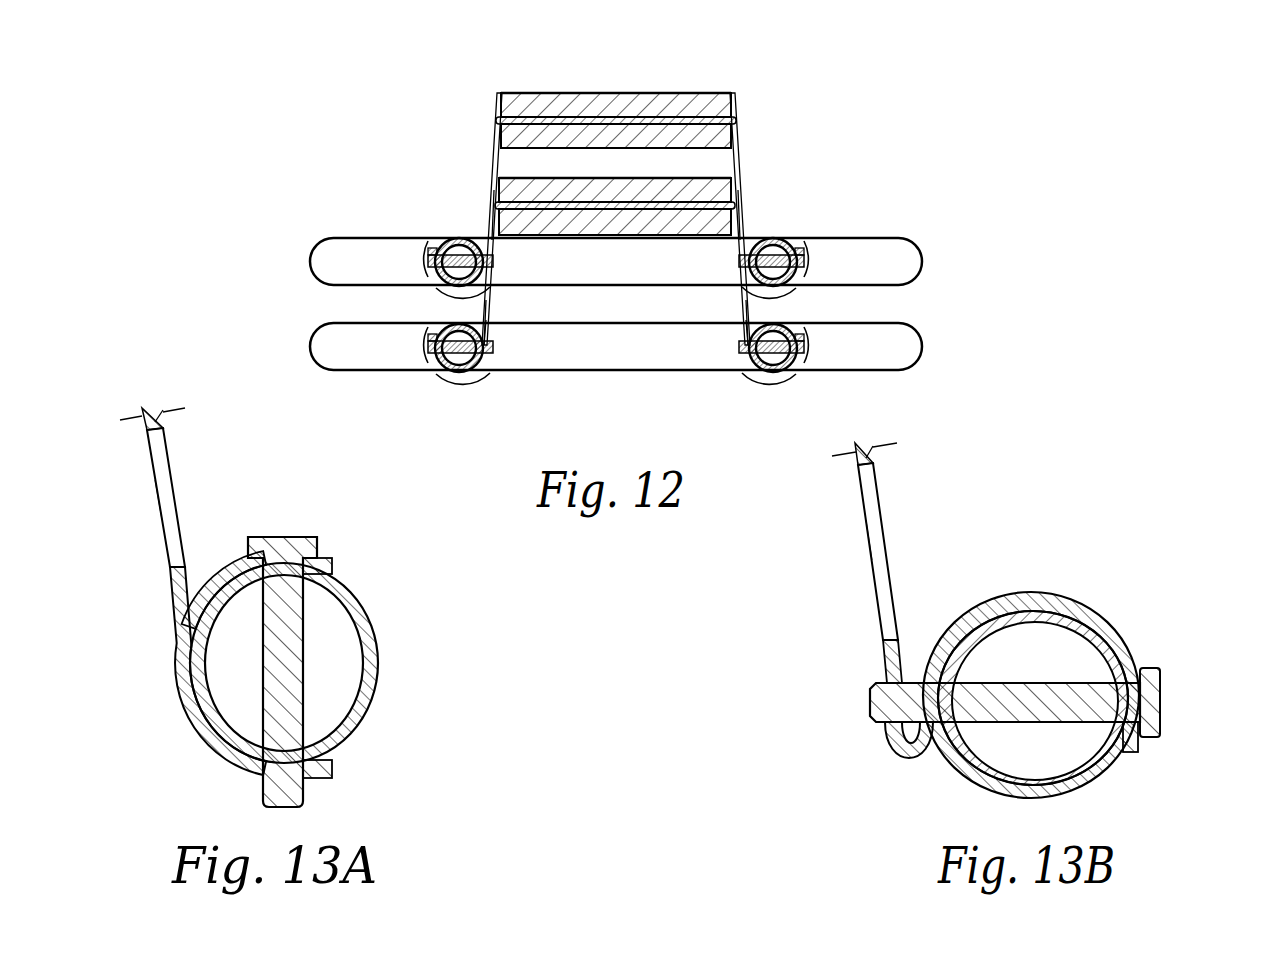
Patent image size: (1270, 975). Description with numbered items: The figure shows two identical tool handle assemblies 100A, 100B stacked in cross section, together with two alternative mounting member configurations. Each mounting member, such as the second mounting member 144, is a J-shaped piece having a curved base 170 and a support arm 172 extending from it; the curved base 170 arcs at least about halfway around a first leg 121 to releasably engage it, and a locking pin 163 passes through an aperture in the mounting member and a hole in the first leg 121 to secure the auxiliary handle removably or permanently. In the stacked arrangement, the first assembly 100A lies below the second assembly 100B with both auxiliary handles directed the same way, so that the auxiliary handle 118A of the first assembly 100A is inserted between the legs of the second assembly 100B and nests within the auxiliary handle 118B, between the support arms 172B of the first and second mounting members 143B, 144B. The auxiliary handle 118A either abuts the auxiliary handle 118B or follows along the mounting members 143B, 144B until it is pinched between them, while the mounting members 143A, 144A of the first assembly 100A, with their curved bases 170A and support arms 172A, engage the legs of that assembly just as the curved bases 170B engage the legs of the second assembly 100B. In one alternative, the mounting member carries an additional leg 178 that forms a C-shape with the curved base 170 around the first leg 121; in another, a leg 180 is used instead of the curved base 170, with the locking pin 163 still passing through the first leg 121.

In FIG. 12, the first tool handle assembly 100A is at (322, 372).
In FIG. 12, the second tool handle assembly 100B is at (312, 255).
In FIG. 12, the auxiliary handle of the first assembly 118A is at (698, 178).
In FIG. 12, the auxiliary handle of the second assembly 118B is at (566, 92).
In FIG. 13A, the first leg 121 is at (376, 700).
In FIG. 13B, the first leg 121 is at (1092, 778).
In FIG. 12, the first mounting member of the first assembly 143A is at (485, 333).
In FIG. 12, the first mounting member of the second assembly 143B is at (491, 215).
In FIG. 13A, the second mounting member 144 is at (158, 504).
In FIG. 13B, the second mounting member 144 is at (868, 535).
In FIG. 12, the second mounting member of the first assembly 144A is at (747, 336).
In FIG. 12, the second mounting member of the second assembly 144B is at (742, 226).
In FIG. 13A, the locking pin 163 is at (318, 540).
In FIG. 13B, the locking pin 163 is at (1163, 702).
In FIG. 13A, the curved base 170 is at (202, 756).
In FIG. 13B, the curved base 170 is at (908, 699).
In FIG. 12, the curved base of the first assembly 170A is at (457, 383).
In FIG. 12, the curved base of the second assembly 170B is at (438, 291).
In FIG. 13A, the support arm 172 is at (174, 473).
In FIG. 13B, the support arm 172 is at (884, 507).
In FIG. 12, the support arm of the first assembly 172A is at (486, 340).
In FIG. 12, the support arm of the second assembly 172B is at (493, 168).
In FIG. 13A, the additional leg 178 is at (230, 562).
In FIG. 13B, the leg 180 is at (1048, 592).